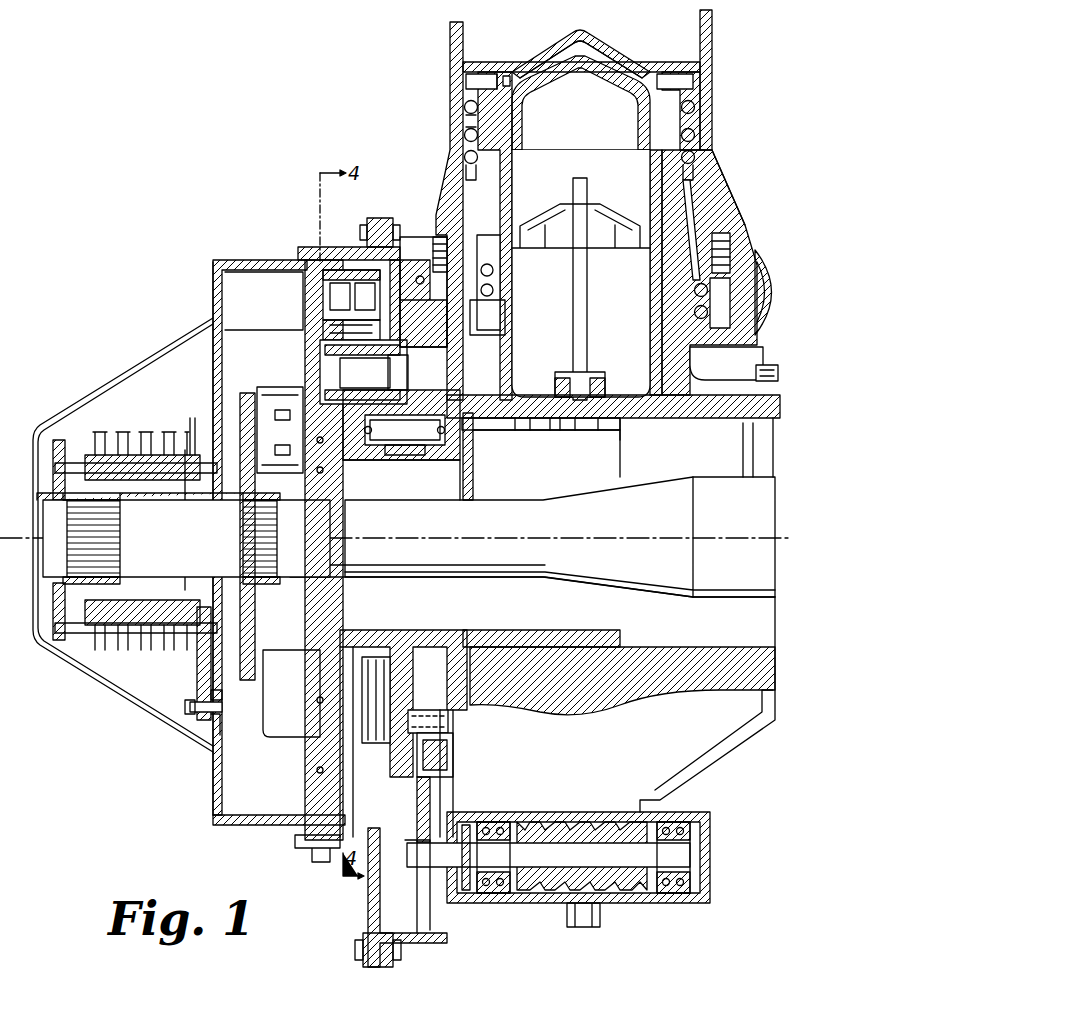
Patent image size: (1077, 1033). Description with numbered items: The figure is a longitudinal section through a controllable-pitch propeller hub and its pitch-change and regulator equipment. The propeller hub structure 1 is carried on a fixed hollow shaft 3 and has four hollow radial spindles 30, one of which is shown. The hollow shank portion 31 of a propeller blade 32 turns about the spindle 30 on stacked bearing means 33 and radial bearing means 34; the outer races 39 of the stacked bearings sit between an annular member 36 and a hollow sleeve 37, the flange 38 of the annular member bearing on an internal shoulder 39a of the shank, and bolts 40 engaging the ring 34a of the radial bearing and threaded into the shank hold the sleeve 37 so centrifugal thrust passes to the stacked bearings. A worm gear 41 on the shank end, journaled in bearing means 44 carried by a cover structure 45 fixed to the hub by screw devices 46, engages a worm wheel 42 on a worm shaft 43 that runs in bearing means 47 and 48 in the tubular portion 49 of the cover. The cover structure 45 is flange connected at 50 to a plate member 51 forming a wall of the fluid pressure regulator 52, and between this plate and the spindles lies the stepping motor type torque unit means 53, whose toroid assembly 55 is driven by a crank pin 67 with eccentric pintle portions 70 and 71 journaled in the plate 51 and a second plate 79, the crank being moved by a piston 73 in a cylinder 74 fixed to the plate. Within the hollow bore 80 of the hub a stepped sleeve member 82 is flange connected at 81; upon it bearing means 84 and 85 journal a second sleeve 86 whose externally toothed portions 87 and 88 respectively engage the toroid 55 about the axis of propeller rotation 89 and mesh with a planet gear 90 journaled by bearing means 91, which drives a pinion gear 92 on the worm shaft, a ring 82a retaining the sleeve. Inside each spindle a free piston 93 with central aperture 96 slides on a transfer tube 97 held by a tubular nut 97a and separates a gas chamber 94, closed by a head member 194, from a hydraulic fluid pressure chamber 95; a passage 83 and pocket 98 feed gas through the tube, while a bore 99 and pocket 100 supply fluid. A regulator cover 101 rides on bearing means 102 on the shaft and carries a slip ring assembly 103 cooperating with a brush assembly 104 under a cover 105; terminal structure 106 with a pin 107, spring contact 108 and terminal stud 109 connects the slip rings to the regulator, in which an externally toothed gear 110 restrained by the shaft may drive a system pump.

The propeller hub structure 1 is at (735, 720).
The fixed hollow shaft 3 is at (600, 590).
The spindle 30 is at (702, 190).
The hollow shank portion 31 is at (705, 135).
The propeller blade 32 is at (712, 30).
The stacked bearing means 33 is at (458, 118).
The radial bearing means 34 is at (493, 295).
The ring 34a is at (488, 298).
The annular member 36 is at (620, 70).
The hollow sleeve 37 is at (697, 235).
The flange 38 is at (478, 80).
The outer races 39 is at (695, 105).
The internal shoulder 39a is at (697, 80).
The bolts 40 is at (732, 245).
The worm gear 41 is at (694, 290).
The worm wheel 42 is at (545, 880).
The worm shaft 43 is at (495, 890).
The bearing means 44 is at (735, 345).
The cover structure 45 is at (768, 292).
The screw devices 46 is at (768, 366).
The bearing means 47 is at (470, 895).
The bearing means 48 is at (680, 893).
The tubular portion 49 is at (633, 905).
The flange connection 50 is at (368, 967).
The plate member 51 is at (368, 912).
The fluid pressure regulator 52 is at (262, 260).
The stepping motor type torque unit means 53 is at (383, 218).
The toroid assembly 55 is at (363, 372).
The crank pin 67 is at (325, 335).
The eccentric pintle portion 70 is at (320, 365).
The eccentric pintle portion 71 is at (400, 362).
The piston 73 is at (325, 290).
The cylinder 74 is at (360, 250).
The second plate 79 is at (416, 237).
The hollow bore 80 is at (515, 660).
The flange connection 81 is at (450, 712).
The stepped sleeve member 82 is at (470, 625).
The ring 82a is at (353, 462).
The passage 83 is at (505, 430).
The bearing means 84 is at (441, 440).
The bearing means 85 is at (370, 440).
The second sleeve 86 is at (410, 455).
The externally toothed portion 87 is at (405, 424).
The externally toothed portion 88 is at (440, 415).
The axis of propeller rotation 89 is at (522, 578).
The planet gear 90 is at (452, 755).
The bearing means 91 is at (400, 745).
The pinion gear 92 is at (432, 815).
The free piston 93 is at (615, 220).
The gas chamber 94 is at (595, 85).
The hydraulic fluid pressure chamber 95 is at (650, 418).
The central aperture 96 is at (587, 205).
The transfer tube 97 is at (574, 265).
The tubular nut 97a is at (565, 372).
The pocket 98 is at (588, 432).
The bore 99 is at (528, 432).
The pocket 100 is at (556, 432).
The regulator cover 101 is at (213, 295).
The bearing means 102 is at (210, 560).
The slip ring assembly 103 is at (192, 418).
The brush assembly 104 is at (125, 430).
The cover 105 is at (102, 392).
The terminal structure 106 is at (188, 705).
The pin 107 is at (200, 650).
The spring contact 108 is at (222, 695).
The terminal stud 109 is at (222, 718).
The externally toothed gear 110 is at (250, 648).
The head member 194 is at (548, 70).